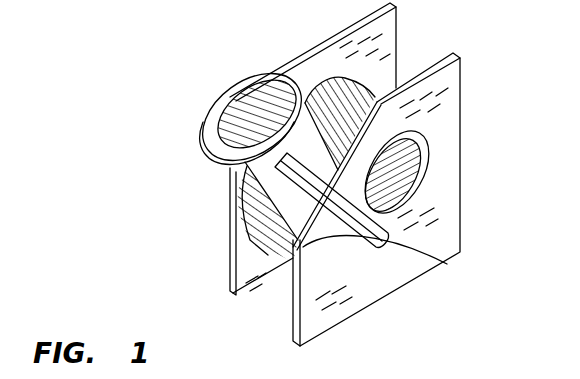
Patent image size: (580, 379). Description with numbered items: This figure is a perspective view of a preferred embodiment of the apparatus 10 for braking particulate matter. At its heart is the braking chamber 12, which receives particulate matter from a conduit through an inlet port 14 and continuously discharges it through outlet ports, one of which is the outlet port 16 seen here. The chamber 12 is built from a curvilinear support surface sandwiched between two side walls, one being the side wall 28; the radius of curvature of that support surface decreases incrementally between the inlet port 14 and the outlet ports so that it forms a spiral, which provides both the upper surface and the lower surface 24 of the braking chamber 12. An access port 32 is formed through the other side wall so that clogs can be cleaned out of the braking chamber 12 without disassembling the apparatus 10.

The apparatus 10 is at (136, 72).
The braking chamber 12 is at (291, 263).
The inlet port 14 is at (203, 112).
The outlet port 16 is at (428, 164).
The lower surface 24 is at (390, 240).
The side wall 28 is at (305, 45).
The access port 32 is at (233, 196).